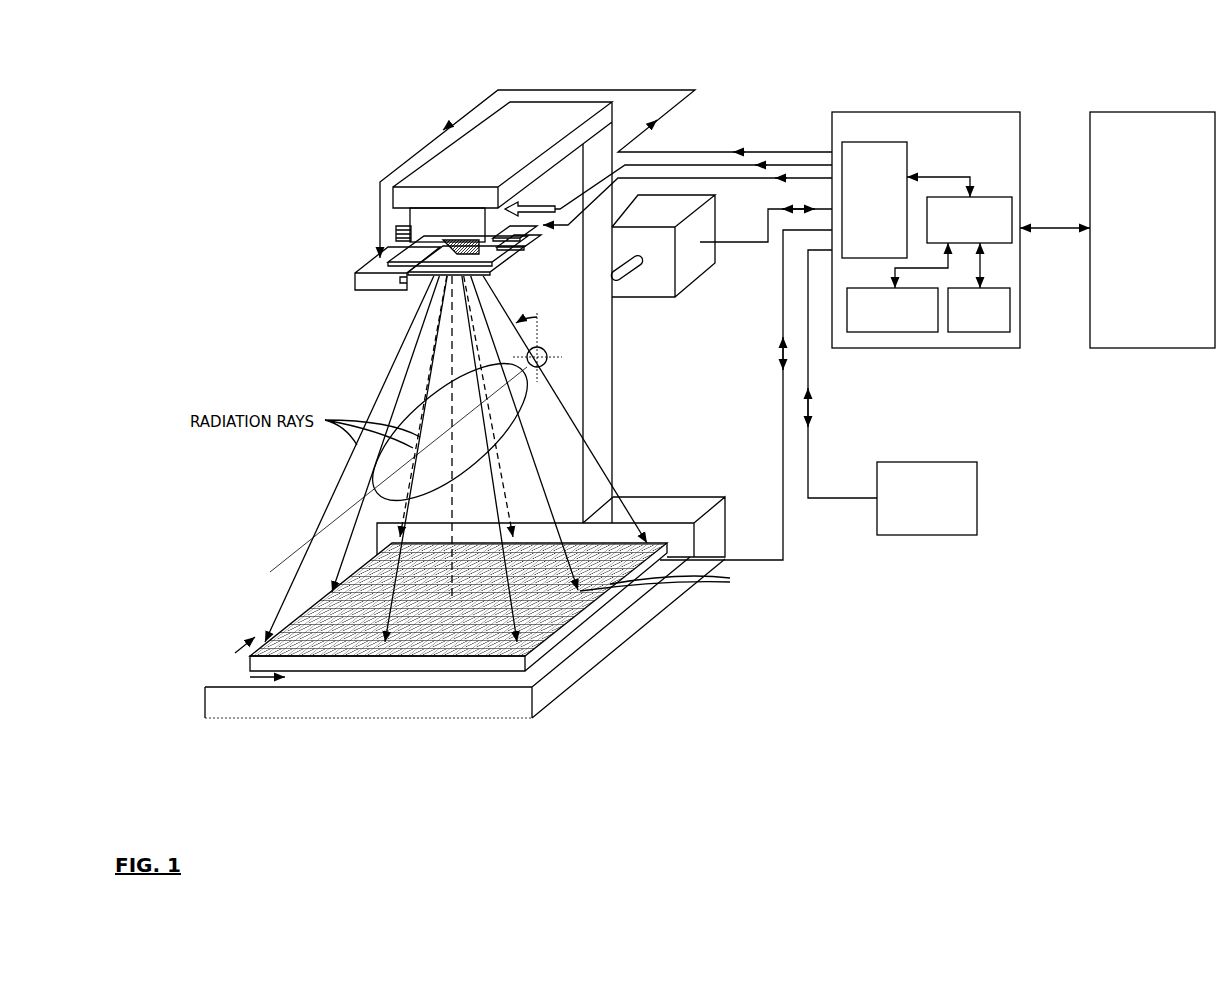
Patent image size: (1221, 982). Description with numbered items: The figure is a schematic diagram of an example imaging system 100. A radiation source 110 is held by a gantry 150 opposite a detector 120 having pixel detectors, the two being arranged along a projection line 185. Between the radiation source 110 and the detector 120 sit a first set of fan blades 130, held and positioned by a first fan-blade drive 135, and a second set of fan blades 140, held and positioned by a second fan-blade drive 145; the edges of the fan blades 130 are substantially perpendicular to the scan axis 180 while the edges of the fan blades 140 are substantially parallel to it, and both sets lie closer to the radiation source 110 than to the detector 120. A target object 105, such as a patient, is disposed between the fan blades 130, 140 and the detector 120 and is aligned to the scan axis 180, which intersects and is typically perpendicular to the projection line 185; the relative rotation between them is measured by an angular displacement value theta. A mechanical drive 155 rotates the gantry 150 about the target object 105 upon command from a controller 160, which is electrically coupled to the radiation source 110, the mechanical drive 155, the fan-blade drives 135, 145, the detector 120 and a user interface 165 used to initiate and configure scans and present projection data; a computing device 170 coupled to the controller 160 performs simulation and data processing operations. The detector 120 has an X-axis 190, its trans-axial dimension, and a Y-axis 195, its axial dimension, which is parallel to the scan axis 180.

The imaging system 100 is at (173, 103).
The target object 105 is at (497, 408).
The radiation source 110 is at (420, 222).
The detector 120 is at (528, 658).
The first set of fan blades 130 is at (493, 260).
The first fan-blade drive 135 is at (372, 278).
The second set of fan blades 140 is at (440, 241).
The second fan-blade drive 145 is at (530, 228).
The gantry 150 is at (603, 462).
The mechanical drive 155 is at (653, 280).
The controller 160 is at (926, 230).
The user interface 165 is at (915, 535).
The computing device 170 is at (1152, 230).
The scan axis 180 is at (310, 540).
The projection line 185 is at (452, 398).
The X-axis 190 is at (317, 688).
The Y-axis 195 is at (232, 623).